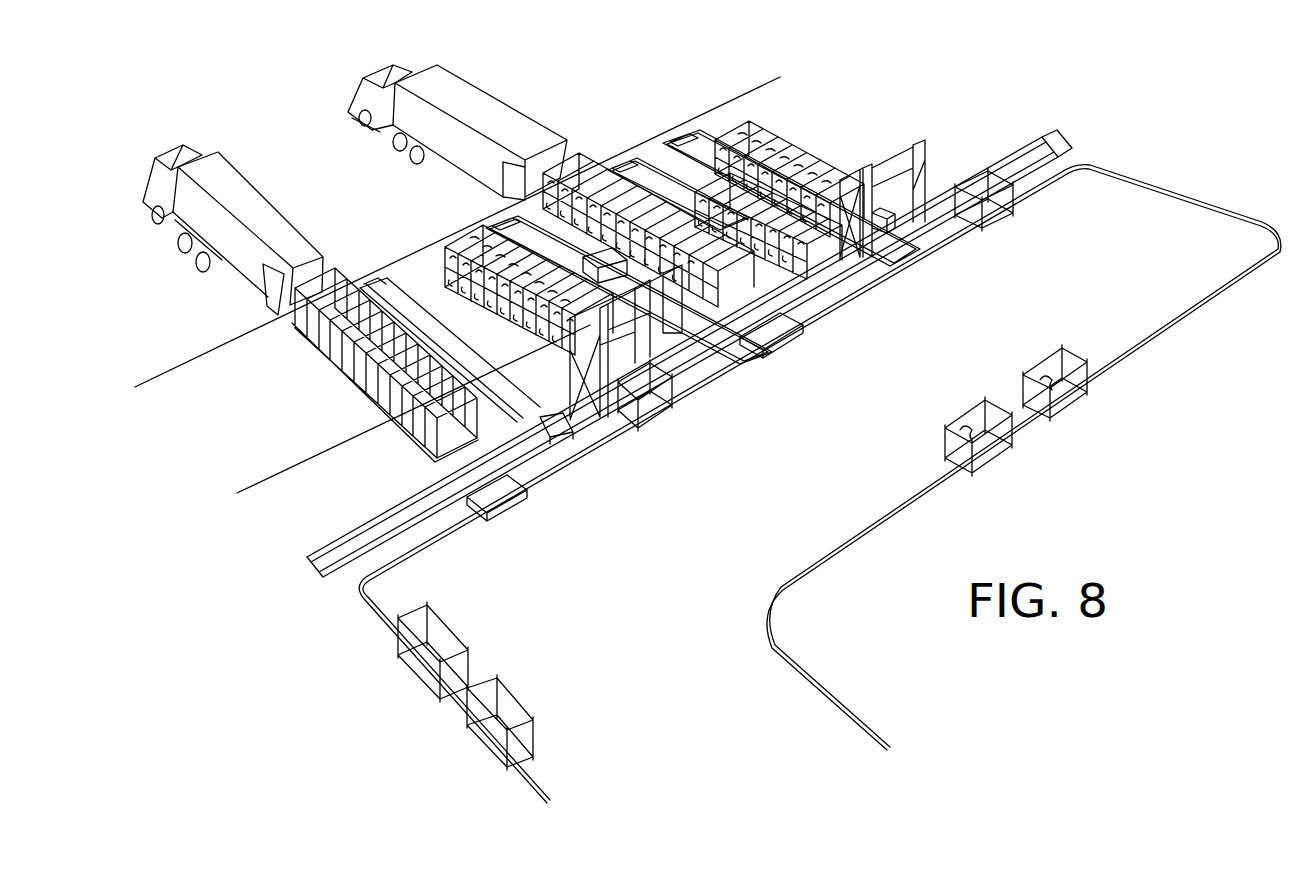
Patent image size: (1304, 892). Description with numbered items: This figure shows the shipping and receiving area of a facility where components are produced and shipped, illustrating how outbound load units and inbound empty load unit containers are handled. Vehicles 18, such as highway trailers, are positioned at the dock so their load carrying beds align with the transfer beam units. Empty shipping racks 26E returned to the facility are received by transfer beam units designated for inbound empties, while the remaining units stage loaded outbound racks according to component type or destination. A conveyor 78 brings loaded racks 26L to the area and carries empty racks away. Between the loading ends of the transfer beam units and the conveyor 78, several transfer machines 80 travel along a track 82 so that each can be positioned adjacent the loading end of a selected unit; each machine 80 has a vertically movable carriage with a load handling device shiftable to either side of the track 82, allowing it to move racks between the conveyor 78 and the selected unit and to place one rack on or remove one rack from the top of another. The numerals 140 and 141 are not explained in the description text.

The vehicles 18 is at (300, 222).
The conveyor loops with pallets and box rows 140 is at (630, 158).
The pallets 141 is at (407, 446).
The empty shipping racks 26E is at (434, 504).
The track 82 is at (370, 527).
The transfer machines 80 is at (593, 412).
The conveyor 78 is at (870, 557).
The loaded racks 26L is at (975, 412).